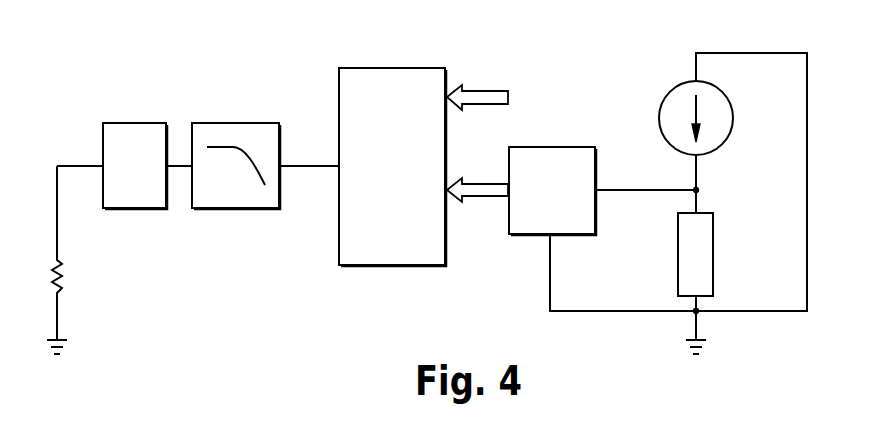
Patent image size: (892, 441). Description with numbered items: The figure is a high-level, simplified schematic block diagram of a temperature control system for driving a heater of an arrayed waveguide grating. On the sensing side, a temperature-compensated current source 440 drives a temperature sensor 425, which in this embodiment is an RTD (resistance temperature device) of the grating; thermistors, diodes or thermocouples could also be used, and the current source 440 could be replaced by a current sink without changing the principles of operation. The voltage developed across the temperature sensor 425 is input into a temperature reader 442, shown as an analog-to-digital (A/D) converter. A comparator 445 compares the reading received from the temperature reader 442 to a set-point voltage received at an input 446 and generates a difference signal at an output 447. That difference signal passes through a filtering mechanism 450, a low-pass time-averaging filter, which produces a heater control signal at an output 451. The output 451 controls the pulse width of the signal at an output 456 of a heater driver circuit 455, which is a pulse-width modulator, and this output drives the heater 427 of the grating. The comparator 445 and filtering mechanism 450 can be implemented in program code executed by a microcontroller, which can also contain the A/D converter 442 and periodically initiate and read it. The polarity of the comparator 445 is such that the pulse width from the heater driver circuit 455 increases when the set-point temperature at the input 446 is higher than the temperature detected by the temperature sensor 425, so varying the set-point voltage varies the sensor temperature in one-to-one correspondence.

The temperature sensor 425 is at (713, 245).
The heater 427 is at (63, 267).
The temperature-compensated current source 440 is at (734, 108).
The temperature reader 442 is at (562, 147).
The comparator 445 is at (403, 68).
The input 446 is at (478, 90).
The output 447 is at (313, 163).
The filtering mechanism 450 is at (230, 208).
The output 451 is at (180, 163).
The heater driver circuit 455 is at (133, 208).
The output 456 is at (80, 163).